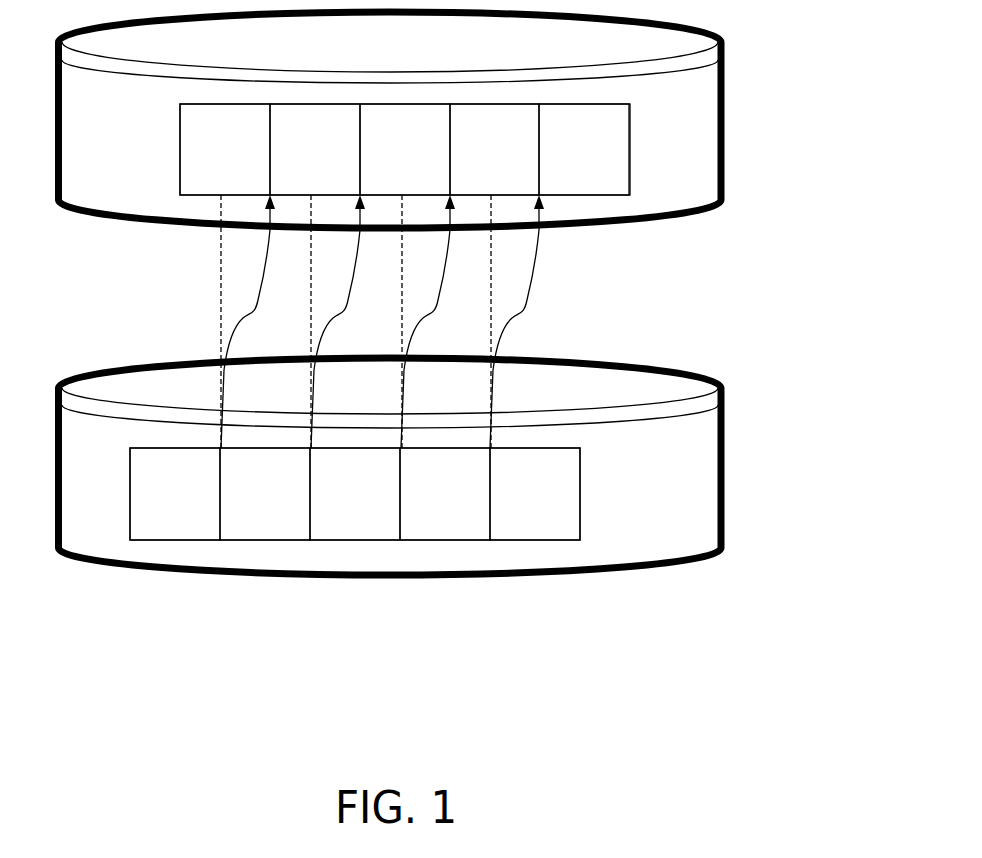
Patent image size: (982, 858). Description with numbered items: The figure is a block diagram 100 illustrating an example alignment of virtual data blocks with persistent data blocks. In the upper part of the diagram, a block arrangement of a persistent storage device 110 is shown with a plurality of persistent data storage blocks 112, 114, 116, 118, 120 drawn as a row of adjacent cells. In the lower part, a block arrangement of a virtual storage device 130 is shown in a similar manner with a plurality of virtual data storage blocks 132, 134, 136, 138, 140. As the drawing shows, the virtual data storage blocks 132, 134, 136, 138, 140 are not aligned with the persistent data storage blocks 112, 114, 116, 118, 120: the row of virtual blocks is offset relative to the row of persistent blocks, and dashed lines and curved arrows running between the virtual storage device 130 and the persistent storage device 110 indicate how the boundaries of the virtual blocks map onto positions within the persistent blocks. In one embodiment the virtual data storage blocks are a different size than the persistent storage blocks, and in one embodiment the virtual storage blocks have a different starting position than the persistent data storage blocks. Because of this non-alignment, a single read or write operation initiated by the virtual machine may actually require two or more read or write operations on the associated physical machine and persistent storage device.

The block diagram 100 is at (673, 662).
The persistent storage device 110 is at (725, 125).
The persistent data storage block 112 is at (225, 149).
The persistent data storage block 114 is at (315, 149).
The persistent data storage block 116 is at (405, 149).
The persistent data storage block 118 is at (494, 149).
The persistent data storage block 120 is at (584, 149).
The virtual storage device 130 is at (724, 470).
The virtual data storage block 132 is at (175, 494).
The virtual data storage block 134 is at (265, 494).
The virtual data storage block 136 is at (355, 494).
The virtual data storage block 138 is at (445, 494).
The virtual data storage block 140 is at (535, 494).